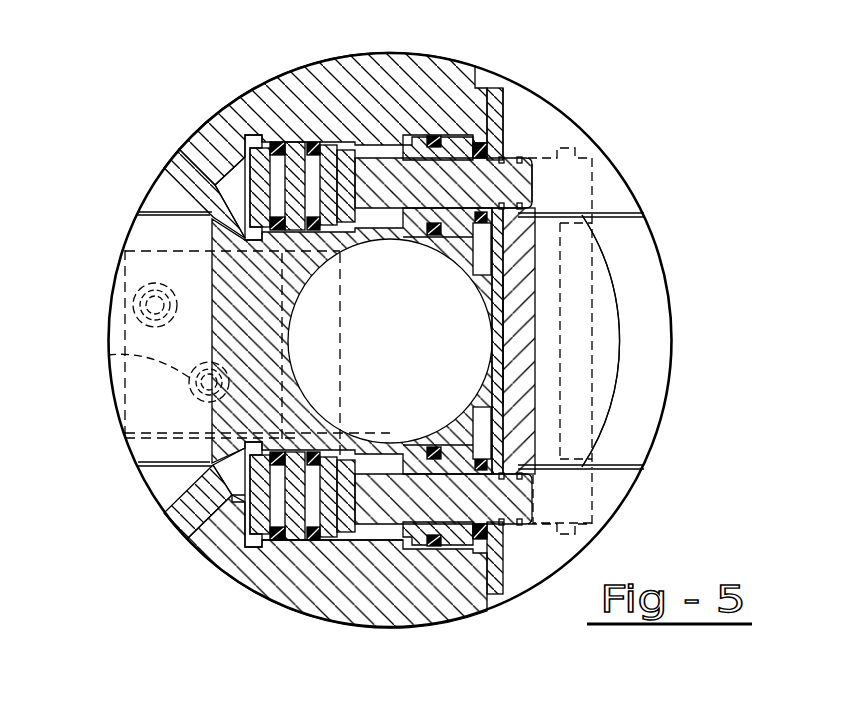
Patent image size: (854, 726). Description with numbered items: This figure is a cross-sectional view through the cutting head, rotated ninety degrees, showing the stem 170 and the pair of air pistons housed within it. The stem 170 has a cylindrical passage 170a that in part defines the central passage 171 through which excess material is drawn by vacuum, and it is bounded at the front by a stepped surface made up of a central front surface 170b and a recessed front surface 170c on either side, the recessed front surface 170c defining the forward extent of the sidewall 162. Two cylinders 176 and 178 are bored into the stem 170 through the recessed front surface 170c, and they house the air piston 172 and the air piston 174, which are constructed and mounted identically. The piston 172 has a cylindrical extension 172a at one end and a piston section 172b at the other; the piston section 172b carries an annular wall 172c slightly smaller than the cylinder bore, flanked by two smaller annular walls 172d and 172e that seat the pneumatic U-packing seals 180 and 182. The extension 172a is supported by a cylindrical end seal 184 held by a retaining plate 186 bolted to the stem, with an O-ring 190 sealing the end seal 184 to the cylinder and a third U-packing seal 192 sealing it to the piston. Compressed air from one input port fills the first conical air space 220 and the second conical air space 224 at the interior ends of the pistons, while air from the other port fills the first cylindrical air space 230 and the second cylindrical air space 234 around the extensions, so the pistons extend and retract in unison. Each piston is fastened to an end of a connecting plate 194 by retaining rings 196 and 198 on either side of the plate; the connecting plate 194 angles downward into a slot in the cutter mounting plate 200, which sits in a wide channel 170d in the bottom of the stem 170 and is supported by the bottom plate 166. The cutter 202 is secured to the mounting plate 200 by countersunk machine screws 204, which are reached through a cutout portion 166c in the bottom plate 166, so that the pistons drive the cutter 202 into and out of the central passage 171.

The sidewall 162 is at (417, 623).
The bottom plate 166 is at (660, 318).
The cutout portion 166c is at (148, 432).
The stem 170 is at (162, 487).
The cylindrical passage 170a is at (492, 368).
The central front surface 170b is at (497, 335).
The recessed front surface 170c is at (480, 582).
The wide channel 170d is at (617, 460).
The central passage 171 is at (376, 376).
The air piston 172 is at (299, 279).
The cylindrical extension 172a is at (466, 158).
The piston section 172b is at (258, 140).
The annular wall 172c is at (298, 140).
The annular wall 172d is at (340, 145).
The annular wall 172e is at (245, 140).
The air piston 174 is at (560, 513).
The cylinder 176 is at (380, 210).
The cylinder 178 is at (367, 541).
The pneumatic U-packing seal 180 is at (311, 142).
The pneumatic U-packing seal 182 is at (275, 140).
The cylindrical end seal 184 is at (493, 88).
The retaining plate 186 is at (505, 127).
The O-ring 190 is at (432, 136).
The pneumatic U-packing seal 192 is at (485, 140).
The connecting plate 194 is at (560, 250).
The retaining ring 196 is at (530, 177).
The retaining ring 198 is at (527, 160).
The cutter mounting plate 200 is at (610, 280).
The cutter 202 is at (178, 250).
The countersunk machine screw 204 is at (140, 358).
The first conical air space 220 is at (232, 178).
The second conical air space 224 is at (233, 503).
The first cylindrical air space 230 is at (445, 190).
The second cylindrical air space 234 is at (383, 465).